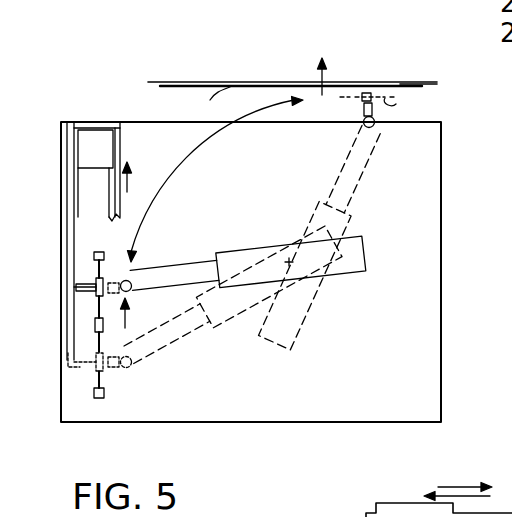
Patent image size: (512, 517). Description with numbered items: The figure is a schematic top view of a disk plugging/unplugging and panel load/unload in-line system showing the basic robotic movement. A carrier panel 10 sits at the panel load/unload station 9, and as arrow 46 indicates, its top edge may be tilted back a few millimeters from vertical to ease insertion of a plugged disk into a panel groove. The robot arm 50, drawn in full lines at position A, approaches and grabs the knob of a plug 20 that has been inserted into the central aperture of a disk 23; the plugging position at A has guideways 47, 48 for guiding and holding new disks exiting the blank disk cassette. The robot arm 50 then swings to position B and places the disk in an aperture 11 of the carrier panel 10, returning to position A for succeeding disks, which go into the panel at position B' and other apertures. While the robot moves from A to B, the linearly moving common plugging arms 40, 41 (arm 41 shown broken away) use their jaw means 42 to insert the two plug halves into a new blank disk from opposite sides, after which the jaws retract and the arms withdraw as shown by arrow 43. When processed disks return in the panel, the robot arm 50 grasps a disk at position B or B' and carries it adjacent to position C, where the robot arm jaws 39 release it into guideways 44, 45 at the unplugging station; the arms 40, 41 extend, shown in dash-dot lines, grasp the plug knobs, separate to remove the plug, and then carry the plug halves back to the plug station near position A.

The panel load/unload station 9 is at (137, 81).
The carrier panel 10 is at (408, 80).
The aperture 11 is at (353, 83).
The plug 20 is at (375, 90).
The disk 23 is at (396, 104).
The robot arm jaws 39 is at (118, 372).
The plugging arm 40 is at (73, 198).
The plugging arm 41 is at (113, 180).
The jaw means 42 is at (96, 297).
The arrow 43 is at (131, 183).
The guideway 44 is at (94, 396).
The guideway 45 is at (80, 356).
The arrow 46 is at (326, 54).
The guideway 47 is at (95, 328).
The guideway 48 is at (94, 255).
The robot arm 50 is at (360, 260).
The position A is at (110, 272).
The position B is at (340, 237).
The position B' is at (209, 103).
The position C is at (143, 367).